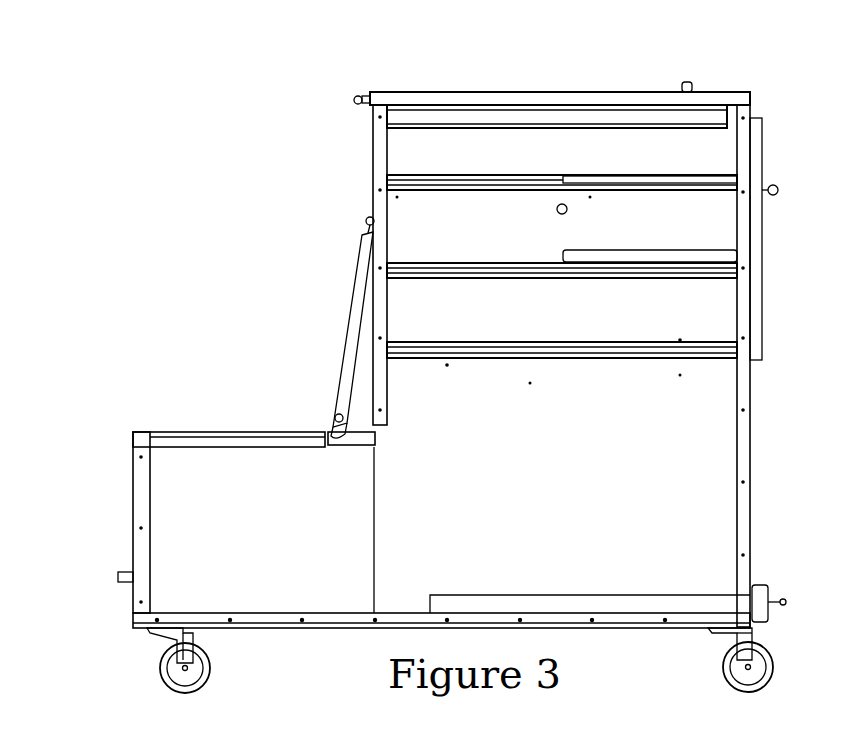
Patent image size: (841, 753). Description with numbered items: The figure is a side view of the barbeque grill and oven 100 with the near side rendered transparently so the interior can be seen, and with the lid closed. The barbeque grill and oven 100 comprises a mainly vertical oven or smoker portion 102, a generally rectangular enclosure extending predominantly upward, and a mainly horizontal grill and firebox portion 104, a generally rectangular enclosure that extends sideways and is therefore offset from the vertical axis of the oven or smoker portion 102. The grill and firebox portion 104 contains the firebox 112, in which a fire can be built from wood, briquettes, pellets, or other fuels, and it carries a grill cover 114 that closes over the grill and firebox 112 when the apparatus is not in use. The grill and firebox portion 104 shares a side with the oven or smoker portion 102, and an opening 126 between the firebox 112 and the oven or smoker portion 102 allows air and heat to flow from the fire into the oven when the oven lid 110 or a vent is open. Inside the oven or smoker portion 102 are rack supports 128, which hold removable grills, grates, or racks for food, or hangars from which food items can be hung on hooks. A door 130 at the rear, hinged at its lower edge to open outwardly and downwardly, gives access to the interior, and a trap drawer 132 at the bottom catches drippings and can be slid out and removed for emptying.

The barbeque grill and oven 100 is at (122, 64).
The oven or smoker portion 102 is at (411, 598).
The grill and firebox portion 104 is at (460, 643).
The oven lid 110 is at (493, 319).
The firebox 112 is at (243, 476).
The grill cover 114 is at (305, 302).
The opening 126 is at (441, 598).
The rack supports 128 is at (609, 210).
The door 130 is at (790, 224).
The trap drawer 132 is at (626, 588).